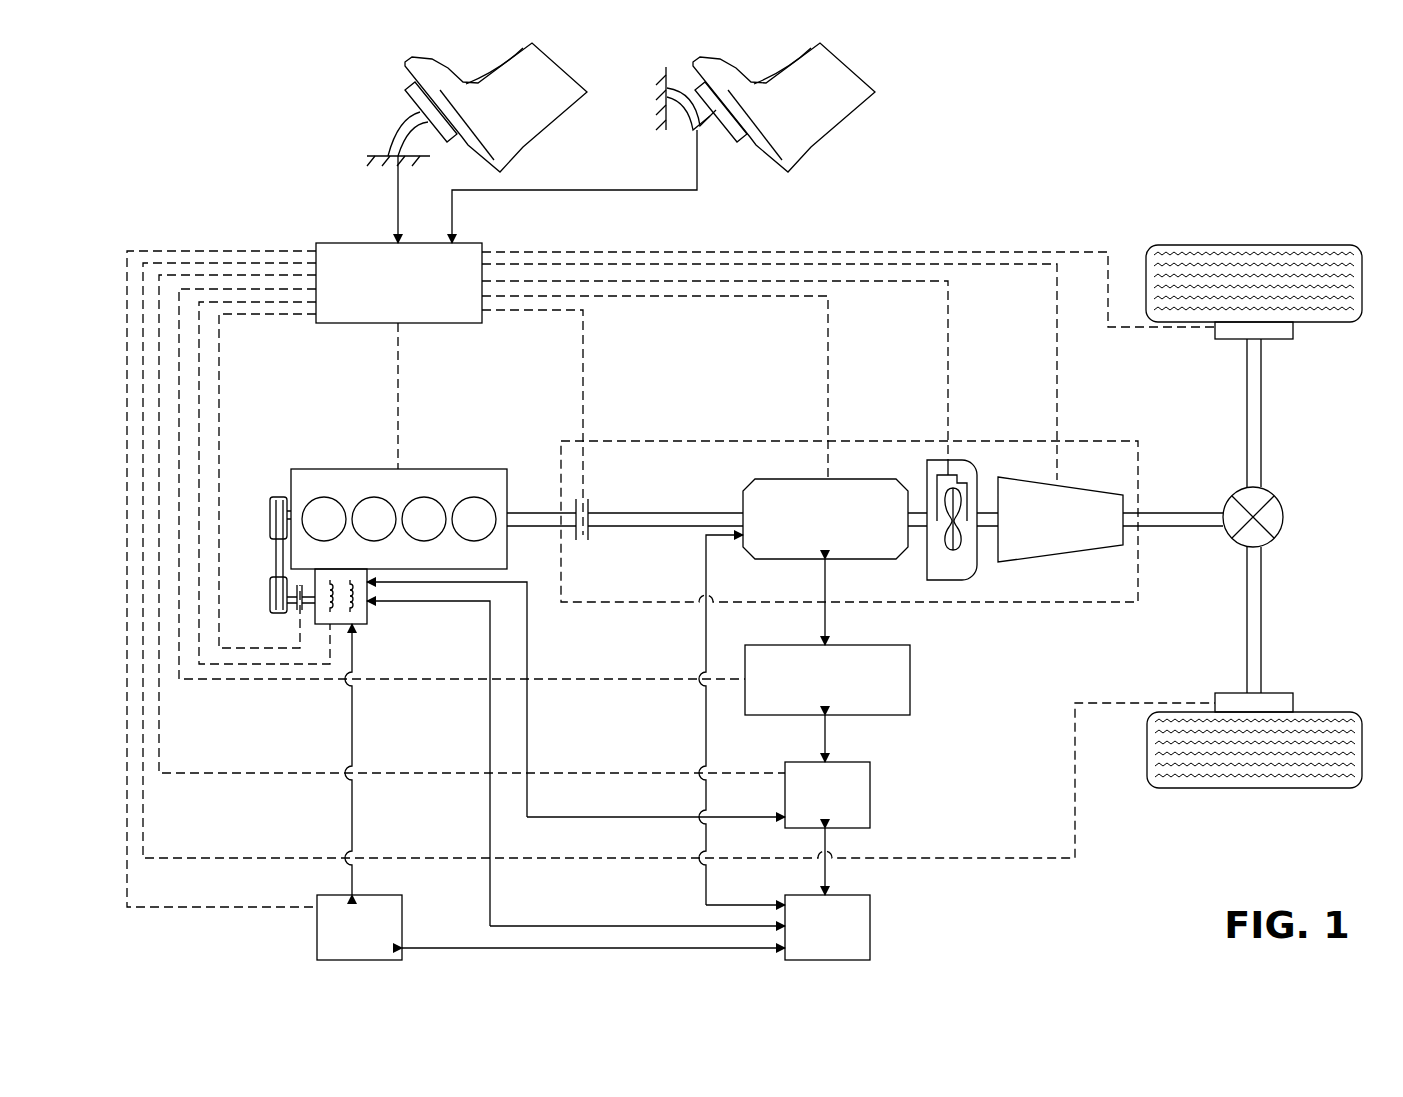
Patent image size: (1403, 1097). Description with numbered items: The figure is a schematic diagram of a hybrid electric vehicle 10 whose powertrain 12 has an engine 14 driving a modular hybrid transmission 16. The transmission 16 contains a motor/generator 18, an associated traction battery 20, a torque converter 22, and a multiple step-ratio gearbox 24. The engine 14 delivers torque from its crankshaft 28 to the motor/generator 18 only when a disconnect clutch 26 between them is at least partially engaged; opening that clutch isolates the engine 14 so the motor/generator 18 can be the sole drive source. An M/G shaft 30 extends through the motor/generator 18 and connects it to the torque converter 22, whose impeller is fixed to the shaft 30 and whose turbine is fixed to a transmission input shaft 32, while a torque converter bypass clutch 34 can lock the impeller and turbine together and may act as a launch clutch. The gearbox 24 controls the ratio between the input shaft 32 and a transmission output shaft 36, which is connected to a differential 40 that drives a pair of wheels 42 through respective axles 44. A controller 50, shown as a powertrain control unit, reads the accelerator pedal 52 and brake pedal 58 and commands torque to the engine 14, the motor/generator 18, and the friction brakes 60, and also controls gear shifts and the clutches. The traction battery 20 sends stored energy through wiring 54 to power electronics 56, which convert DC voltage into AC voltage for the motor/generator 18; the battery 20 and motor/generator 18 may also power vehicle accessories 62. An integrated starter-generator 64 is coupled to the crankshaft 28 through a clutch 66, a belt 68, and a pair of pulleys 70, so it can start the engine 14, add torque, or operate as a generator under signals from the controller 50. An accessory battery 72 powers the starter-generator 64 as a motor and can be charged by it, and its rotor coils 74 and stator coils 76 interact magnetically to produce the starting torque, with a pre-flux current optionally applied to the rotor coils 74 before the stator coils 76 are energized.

The hybrid electric vehicle 10 is at (952, 148).
The powertrain 12 is at (458, 722).
The engine 14 is at (340, 469).
The transmission 16 is at (900, 440).
The motor/generator 18 is at (790, 479).
The traction battery 20 is at (870, 795).
The torque converter 22 is at (950, 580).
The gearbox 24 is at (1062, 560).
The disconnect clutch 26 is at (592, 505).
The crankshaft 28 is at (303, 468).
The M/G shaft 30 is at (690, 512).
The transmission input shaft 32 is at (988, 512).
The torque converter bypass clutch 34 is at (952, 470).
The transmission output shaft 36 is at (1165, 510).
The differential 40 is at (1285, 518).
The wheels 42 is at (1250, 245).
The axles 44 is at (1262, 410).
The controller 50 is at (345, 243).
The accelerator pedal 52 is at (403, 106).
The wiring 54 is at (818, 740).
The power electronics 56 is at (910, 680).
The brake pedal 58 is at (737, 143).
The friction brakes 60 is at (1295, 330).
The vehicle accessories 62 is at (870, 928).
The integrated starter-generator 64 is at (367, 602).
The clutch 66 is at (295, 610).
The belt 68 is at (276, 565).
The pulleys 70 is at (270, 517).
The accessory battery 72 is at (402, 922).
The rotor coils 74 is at (360, 607).
The stator coils 76 is at (340, 580).